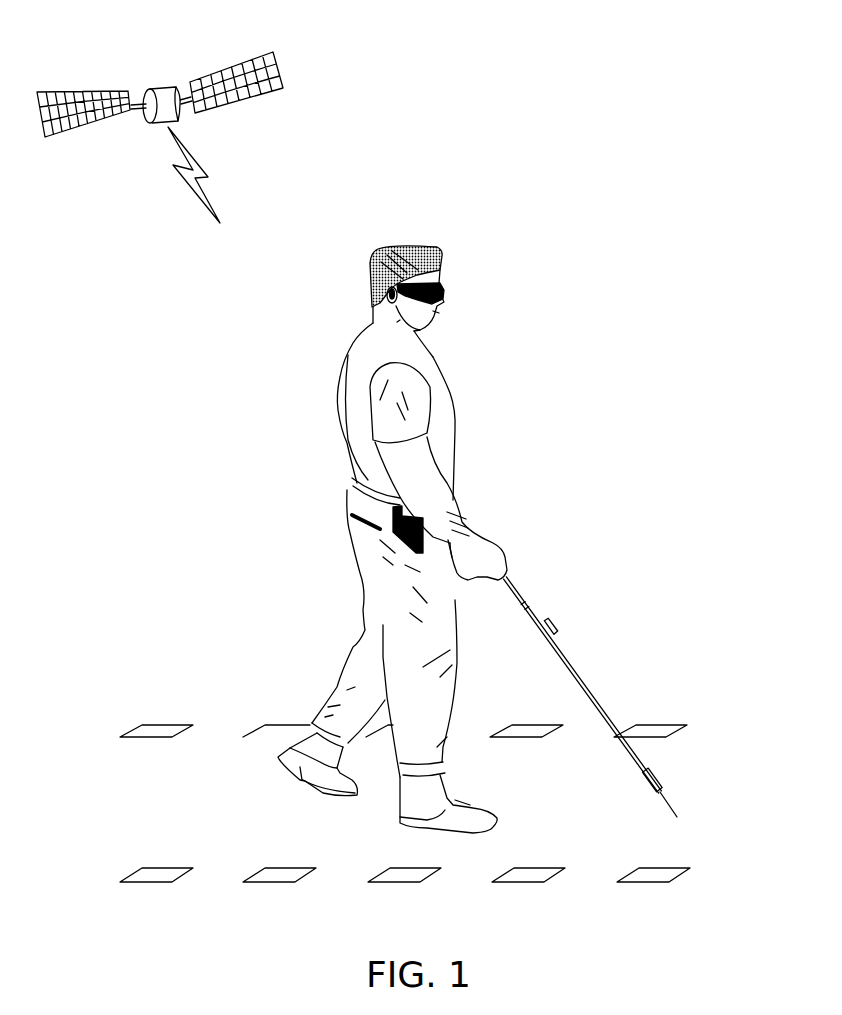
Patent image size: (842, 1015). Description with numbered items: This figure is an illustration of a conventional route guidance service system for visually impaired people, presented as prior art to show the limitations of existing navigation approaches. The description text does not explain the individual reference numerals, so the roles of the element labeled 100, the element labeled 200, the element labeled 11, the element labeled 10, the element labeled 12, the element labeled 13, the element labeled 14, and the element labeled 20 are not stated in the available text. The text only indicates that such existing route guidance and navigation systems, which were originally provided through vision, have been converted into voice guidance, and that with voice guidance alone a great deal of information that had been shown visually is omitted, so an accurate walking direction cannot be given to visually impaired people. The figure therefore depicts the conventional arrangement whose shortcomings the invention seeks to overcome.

The GPS satellite 100 is at (181, 71).
The user (visually impaired person) 200 is at (447, 379).
The earphone 11 is at (372, 293).
The portable guidance terminal 10 is at (392, 512).
The guide block (braille block) 12 is at (265, 725).
The cane 13 is at (512, 585).
The switch on cane 14 is at (558, 626).
The cane tip tag reader 20 is at (664, 782).